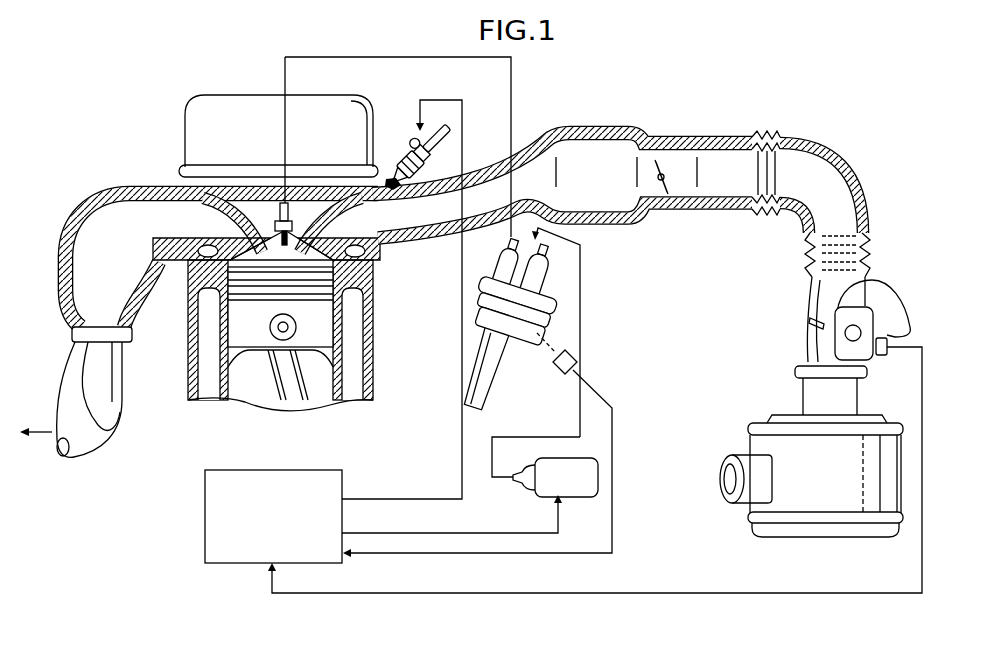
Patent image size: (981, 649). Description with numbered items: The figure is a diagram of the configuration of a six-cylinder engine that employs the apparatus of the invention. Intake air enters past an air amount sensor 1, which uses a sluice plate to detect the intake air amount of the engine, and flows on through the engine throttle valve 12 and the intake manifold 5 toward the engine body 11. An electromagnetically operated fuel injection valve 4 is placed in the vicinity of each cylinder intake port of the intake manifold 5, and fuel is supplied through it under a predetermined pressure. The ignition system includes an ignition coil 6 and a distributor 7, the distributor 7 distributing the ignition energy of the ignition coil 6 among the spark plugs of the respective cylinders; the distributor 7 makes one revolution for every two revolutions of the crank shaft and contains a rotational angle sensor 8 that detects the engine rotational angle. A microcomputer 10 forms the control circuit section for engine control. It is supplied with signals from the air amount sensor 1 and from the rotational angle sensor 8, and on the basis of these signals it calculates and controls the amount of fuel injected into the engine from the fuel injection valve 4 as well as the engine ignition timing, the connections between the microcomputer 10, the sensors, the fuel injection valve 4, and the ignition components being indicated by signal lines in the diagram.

The air amount sensor 1 is at (904, 280).
The fuel injection valve 4 is at (407, 156).
The intake manifold 5 is at (536, 152).
The ignition coil 6 is at (597, 498).
The distributor 7 is at (548, 316).
The rotational angle sensor 8 is at (553, 378).
The microcomputer 10 is at (203, 546).
The engine body 11 is at (333, 96).
The engine throttle valve 12 is at (666, 158).